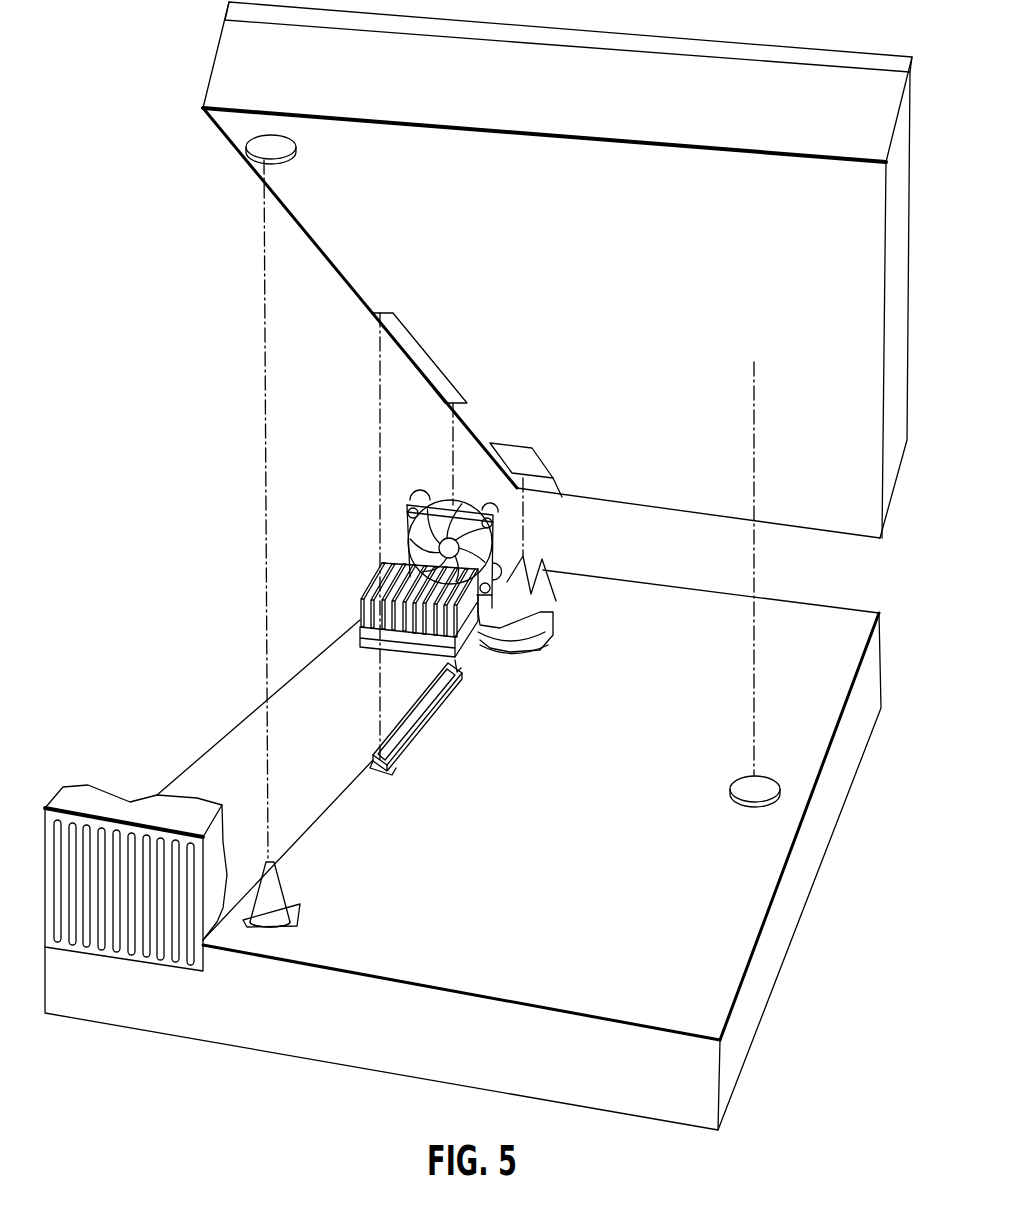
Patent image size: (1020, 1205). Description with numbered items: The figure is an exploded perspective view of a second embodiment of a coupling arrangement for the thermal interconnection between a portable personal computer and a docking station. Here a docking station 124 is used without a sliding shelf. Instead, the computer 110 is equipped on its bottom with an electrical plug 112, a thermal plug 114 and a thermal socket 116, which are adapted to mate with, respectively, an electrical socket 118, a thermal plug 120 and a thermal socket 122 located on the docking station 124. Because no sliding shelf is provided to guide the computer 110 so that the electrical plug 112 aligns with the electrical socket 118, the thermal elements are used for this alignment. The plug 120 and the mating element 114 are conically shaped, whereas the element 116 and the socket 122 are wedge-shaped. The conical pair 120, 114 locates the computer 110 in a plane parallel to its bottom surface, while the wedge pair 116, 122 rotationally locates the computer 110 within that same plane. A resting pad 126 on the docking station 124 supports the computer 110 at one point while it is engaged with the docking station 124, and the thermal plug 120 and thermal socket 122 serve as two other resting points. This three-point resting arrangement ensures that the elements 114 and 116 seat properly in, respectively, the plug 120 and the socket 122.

The computer 110 is at (214, 288).
The electrical plug 112 is at (418, 360).
The thermal plug 114 is at (252, 163).
The thermal socket 116 is at (546, 488).
The electrical socket 118 is at (443, 705).
The thermal plug 120 is at (273, 876).
The thermal socket 122 is at (543, 583).
The docking station 124 is at (180, 673).
The resting pad 126 is at (748, 787).